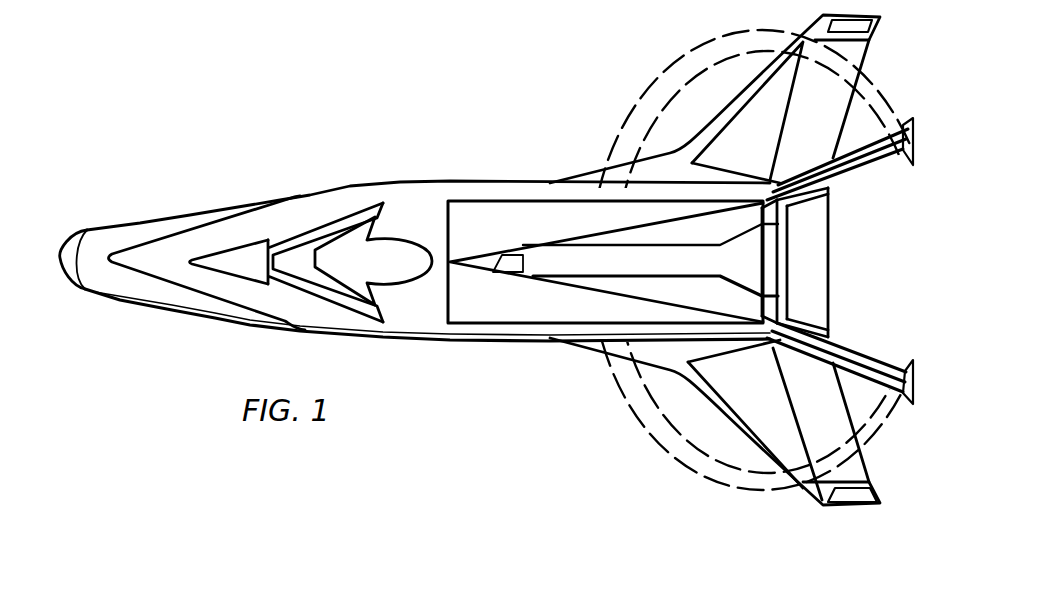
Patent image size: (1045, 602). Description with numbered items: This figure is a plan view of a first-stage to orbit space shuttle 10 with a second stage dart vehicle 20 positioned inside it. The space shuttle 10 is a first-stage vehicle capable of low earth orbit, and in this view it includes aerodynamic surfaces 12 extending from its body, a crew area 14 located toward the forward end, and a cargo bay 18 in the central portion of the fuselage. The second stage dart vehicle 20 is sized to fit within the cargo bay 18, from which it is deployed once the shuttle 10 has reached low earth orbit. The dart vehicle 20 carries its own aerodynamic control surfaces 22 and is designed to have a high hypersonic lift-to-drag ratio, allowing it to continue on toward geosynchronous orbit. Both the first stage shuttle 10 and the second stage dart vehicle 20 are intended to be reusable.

The first-stage to orbit space shuttle 10 is at (357, 184).
The aerodynamic surfaces 12 is at (717, 400).
The crew area 14 is at (290, 237).
The cargo bay 18 is at (473, 215).
The second stage dart vehicle 20 is at (512, 245).
The aerodynamic control surfaces 22 is at (773, 302).